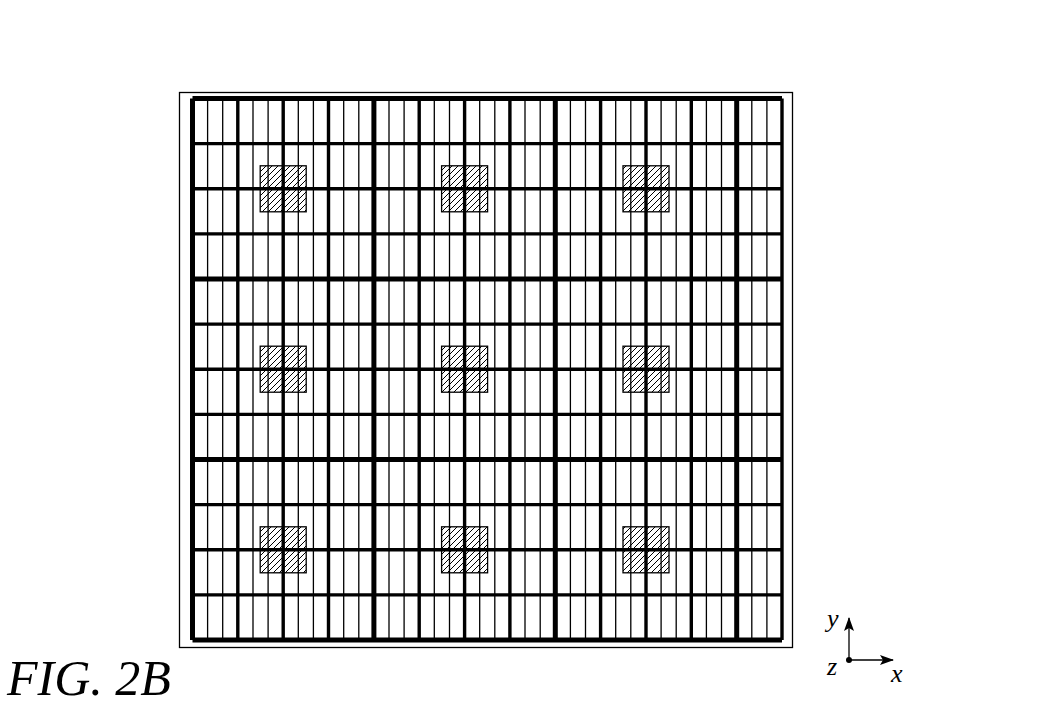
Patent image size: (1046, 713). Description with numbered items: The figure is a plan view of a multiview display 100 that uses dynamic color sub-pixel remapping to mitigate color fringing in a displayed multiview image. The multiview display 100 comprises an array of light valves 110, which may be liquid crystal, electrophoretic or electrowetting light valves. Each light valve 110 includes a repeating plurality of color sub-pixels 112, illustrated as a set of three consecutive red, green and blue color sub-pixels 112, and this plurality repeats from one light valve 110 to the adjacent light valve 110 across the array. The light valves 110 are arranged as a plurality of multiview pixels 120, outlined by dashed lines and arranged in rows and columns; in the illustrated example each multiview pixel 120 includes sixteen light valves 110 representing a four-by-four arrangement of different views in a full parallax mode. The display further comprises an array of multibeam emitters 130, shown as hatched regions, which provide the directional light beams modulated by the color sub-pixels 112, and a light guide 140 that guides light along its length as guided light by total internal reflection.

The multiview display 100 is at (474, 328).
The light valve 110 is at (418, 327).
The color sub-pixel 112 is at (198, 108).
The multiview pixel 120 is at (487, 333).
The multibeam emitter 130 is at (243, 181).
The light guide 140 is at (793, 502).